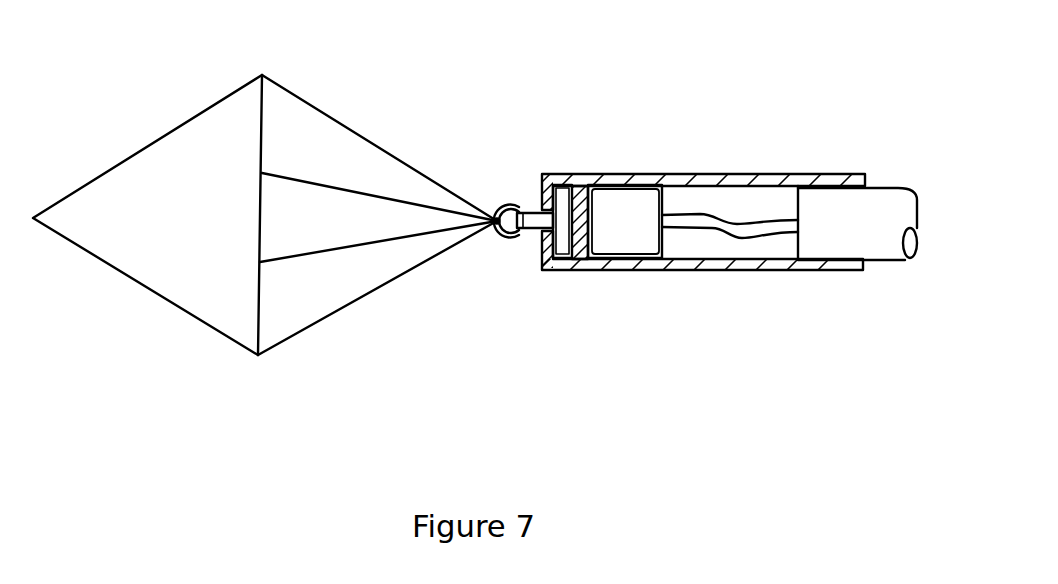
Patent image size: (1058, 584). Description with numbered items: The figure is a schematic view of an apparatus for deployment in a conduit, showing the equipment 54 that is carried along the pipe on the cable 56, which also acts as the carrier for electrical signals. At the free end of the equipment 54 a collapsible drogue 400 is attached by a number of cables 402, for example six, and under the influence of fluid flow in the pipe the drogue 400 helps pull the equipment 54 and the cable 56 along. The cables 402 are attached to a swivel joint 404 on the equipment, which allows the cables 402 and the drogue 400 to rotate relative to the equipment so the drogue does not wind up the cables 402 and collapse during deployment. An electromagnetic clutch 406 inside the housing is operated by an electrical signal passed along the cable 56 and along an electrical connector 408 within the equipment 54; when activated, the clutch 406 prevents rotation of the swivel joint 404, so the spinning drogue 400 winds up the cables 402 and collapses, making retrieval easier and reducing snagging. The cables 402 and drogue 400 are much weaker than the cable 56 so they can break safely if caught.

The equipment 54 is at (753, 174).
The cable 56 is at (890, 235).
The drogue 400 is at (163, 250).
The cables 402 is at (338, 313).
The swivel joint 404 is at (537, 223).
The electromagnetic clutch 406 is at (618, 227).
The electrical connector 408 is at (732, 228).